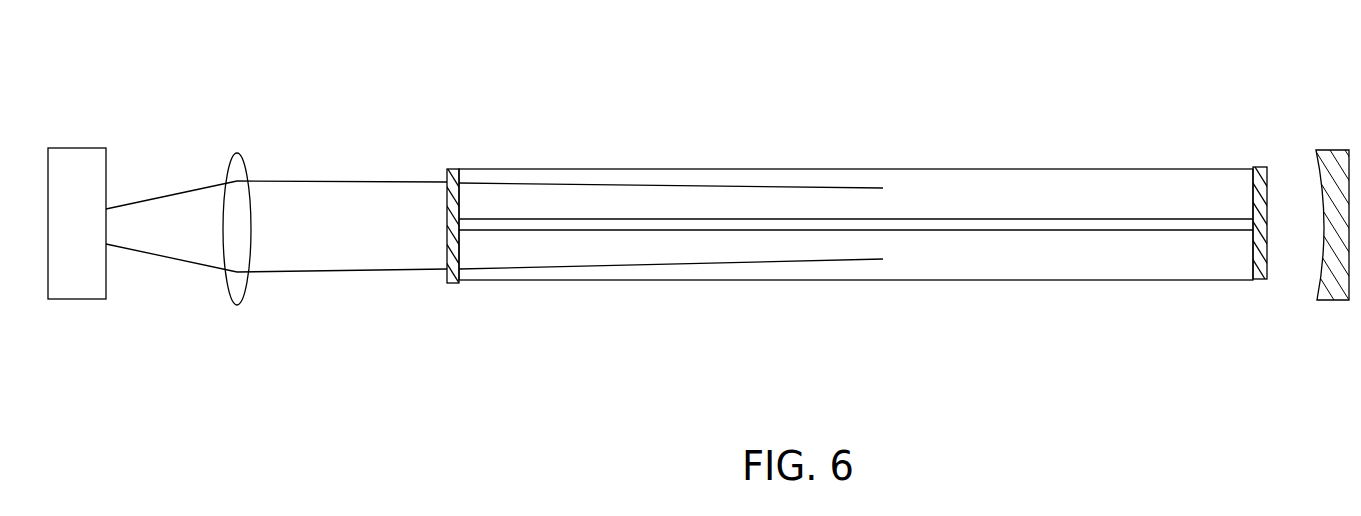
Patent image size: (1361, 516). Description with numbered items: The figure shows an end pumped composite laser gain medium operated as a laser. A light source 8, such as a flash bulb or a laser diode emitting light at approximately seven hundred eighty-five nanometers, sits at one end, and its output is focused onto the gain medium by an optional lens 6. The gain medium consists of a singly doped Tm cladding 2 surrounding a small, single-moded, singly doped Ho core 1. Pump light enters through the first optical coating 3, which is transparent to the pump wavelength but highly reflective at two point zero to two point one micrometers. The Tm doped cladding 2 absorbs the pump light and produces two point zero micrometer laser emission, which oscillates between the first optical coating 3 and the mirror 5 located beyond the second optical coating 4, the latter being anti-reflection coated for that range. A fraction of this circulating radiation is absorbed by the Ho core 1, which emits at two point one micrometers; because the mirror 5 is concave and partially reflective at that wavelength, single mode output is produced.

The Ho doped core 1 is at (1200, 223).
The Tm doped cladding 2 is at (952, 200).
The first optical coating 3 is at (452, 165).
The second optical coating 4 is at (1257, 162).
The mirror 5 is at (1333, 147).
The lens 6 is at (238, 153).
The light source 8 is at (87, 126).